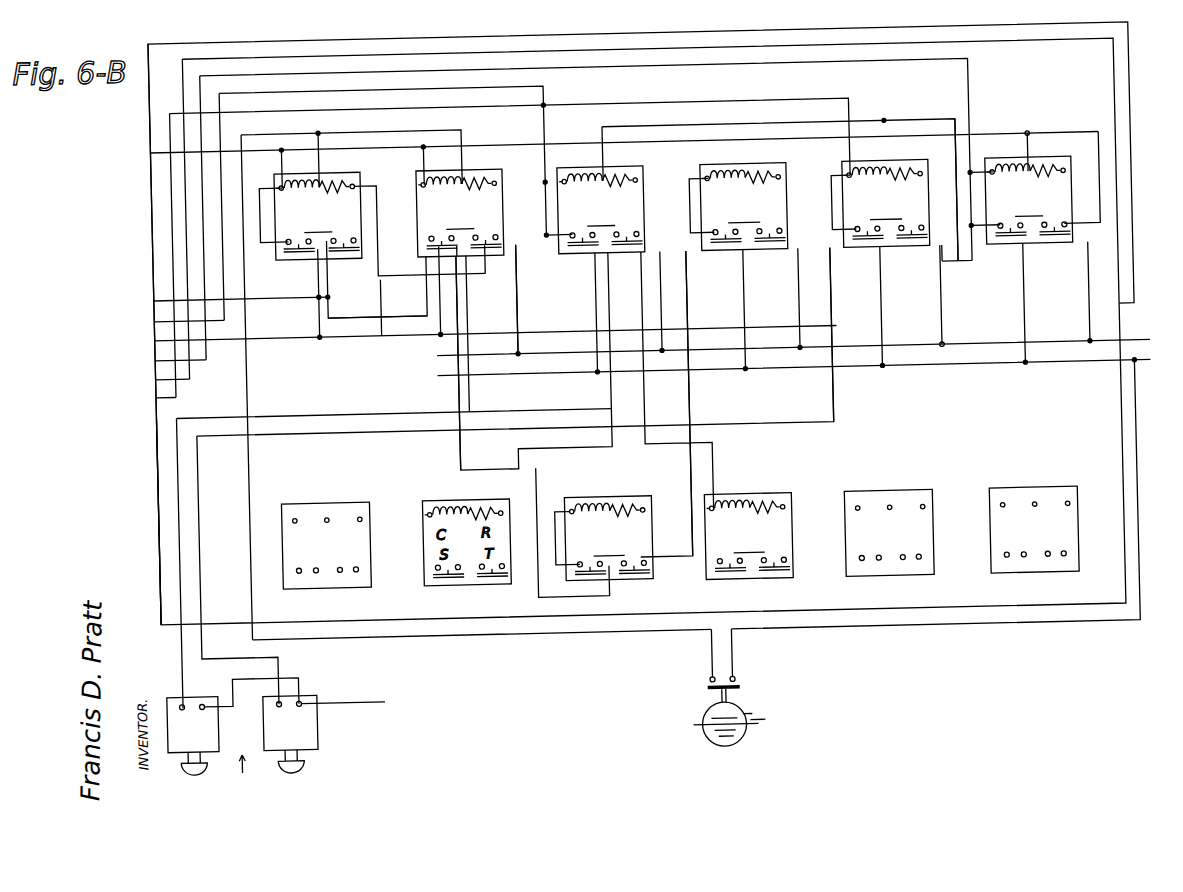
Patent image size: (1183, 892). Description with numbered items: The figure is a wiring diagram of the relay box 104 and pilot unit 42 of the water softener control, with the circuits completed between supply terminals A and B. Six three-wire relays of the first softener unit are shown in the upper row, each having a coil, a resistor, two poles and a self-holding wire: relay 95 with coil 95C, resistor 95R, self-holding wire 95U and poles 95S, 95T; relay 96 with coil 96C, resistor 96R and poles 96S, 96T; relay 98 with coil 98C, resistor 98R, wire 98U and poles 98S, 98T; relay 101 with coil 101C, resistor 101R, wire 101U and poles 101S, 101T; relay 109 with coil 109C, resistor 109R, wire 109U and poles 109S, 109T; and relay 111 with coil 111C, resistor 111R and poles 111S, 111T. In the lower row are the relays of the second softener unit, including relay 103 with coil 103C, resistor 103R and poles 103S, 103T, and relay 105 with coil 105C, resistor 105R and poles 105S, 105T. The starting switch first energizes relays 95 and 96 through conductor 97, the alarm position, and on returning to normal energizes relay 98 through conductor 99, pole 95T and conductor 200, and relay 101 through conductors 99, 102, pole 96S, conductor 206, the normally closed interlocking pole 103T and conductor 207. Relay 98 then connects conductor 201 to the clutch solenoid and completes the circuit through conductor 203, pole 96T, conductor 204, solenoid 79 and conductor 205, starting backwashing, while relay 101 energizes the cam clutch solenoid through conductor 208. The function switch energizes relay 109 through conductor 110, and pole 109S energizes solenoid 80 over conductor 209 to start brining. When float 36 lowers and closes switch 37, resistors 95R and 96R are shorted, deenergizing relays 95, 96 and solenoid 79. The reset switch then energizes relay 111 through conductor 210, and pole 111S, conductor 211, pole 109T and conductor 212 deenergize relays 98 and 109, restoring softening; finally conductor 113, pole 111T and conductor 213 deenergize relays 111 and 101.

The conductor 97 is at (148, 153).
The conductor 99 is at (148, 301).
The conductor 201 is at (148, 322).
The conductor 208 is at (148, 341).
The conductor 210 is at (148, 361).
The conductor 113 is at (148, 380).
The conductor 110 is at (148, 398).
The relay box 104 is at (148, 489).
The relay 95 is at (235, 222).
The coil of relay 95 95C is at (296, 181).
The resistor of relay 95 95R is at (337, 184).
The self-holding wire of relay 95 95U is at (256, 212).
The pole S of relay 95 95S is at (300, 258).
The pole T of relay 95 95T is at (338, 258).
The conductor 200 is at (395, 281).
The conductor 102 is at (378, 305).
The relay 96 is at (462, 223).
The coil of relay 96 96C is at (441, 183).
The resistor of relay 96 96R is at (476, 185).
The pole S of relay 96 96S is at (438, 258).
The pole T of relay 96 96T is at (482, 258).
The conductor 203 is at (525, 268).
The relay 98 is at (600, 212).
The coil of relay 98 98C is at (603, 170).
The resistor of relay 98 98R is at (627, 187).
The self-holding wire of relay 98 98U is at (543, 185).
The pole S of relay 98 98S is at (578, 258).
The pole T of relay 98 98T is at (620, 258).
The relay 101 is at (734, 189).
The coil of relay 101 101C is at (721, 186).
The resistor of relay 101 101R is at (764, 185).
The self-holding wire of relay 101 101U is at (684, 190).
The pole S of relay 101 101S is at (718, 258).
The pole T of relay 101 101T is at (763, 258).
The relay 109 is at (870, 189).
The coil of relay 109 109C is at (866, 186).
The resistor of relay 109 109R is at (900, 187).
The self-holding wire of relay 109 109U is at (828, 197).
The pole S of relay 109 109S is at (862, 258).
The pole T of relay 109 109T is at (904, 258).
The conductor 212 is at (925, 136).
The conductor 211 is at (953, 277).
The relay 111 is at (1032, 191).
The coil of relay 111 111C is at (999, 189).
The resistor of relay 111 111R is at (1047, 189).
The pole S of relay 111 111S is at (1002, 256).
The pole T of relay 111 111T is at (1047, 257).
The conductor 213 is at (1025, 155).
The relay 103 is at (602, 562).
The coil of relay 103 103C is at (575, 515).
The resistor of relay 103 103R is at (620, 515).
The pole S of relay 103 103S is at (571, 582).
The pole T of relay 103 103T is at (617, 582).
The relay 105 is at (758, 533).
The coil of relay 105 105C is at (722, 515).
The resistor of relay 105 105R is at (785, 513).
The pole S of relay 105 105S is at (713, 584).
The pole T of relay 105 105T is at (760, 584).
The conductor 206 is at (452, 399).
The conductor 204 is at (464, 399).
The conductor 207 is at (684, 404).
The conductor 209 is at (828, 411).
The solenoid 79 is at (173, 705).
The solenoid 80 is at (303, 741).
The conductor 205 is at (296, 681).
The pilot unit 42 is at (240, 776).
The float switch 37 is at (741, 700).
The float 36 is at (750, 738).
The supply terminal A is at (1162, 360).
The supply terminal B is at (778, 521).